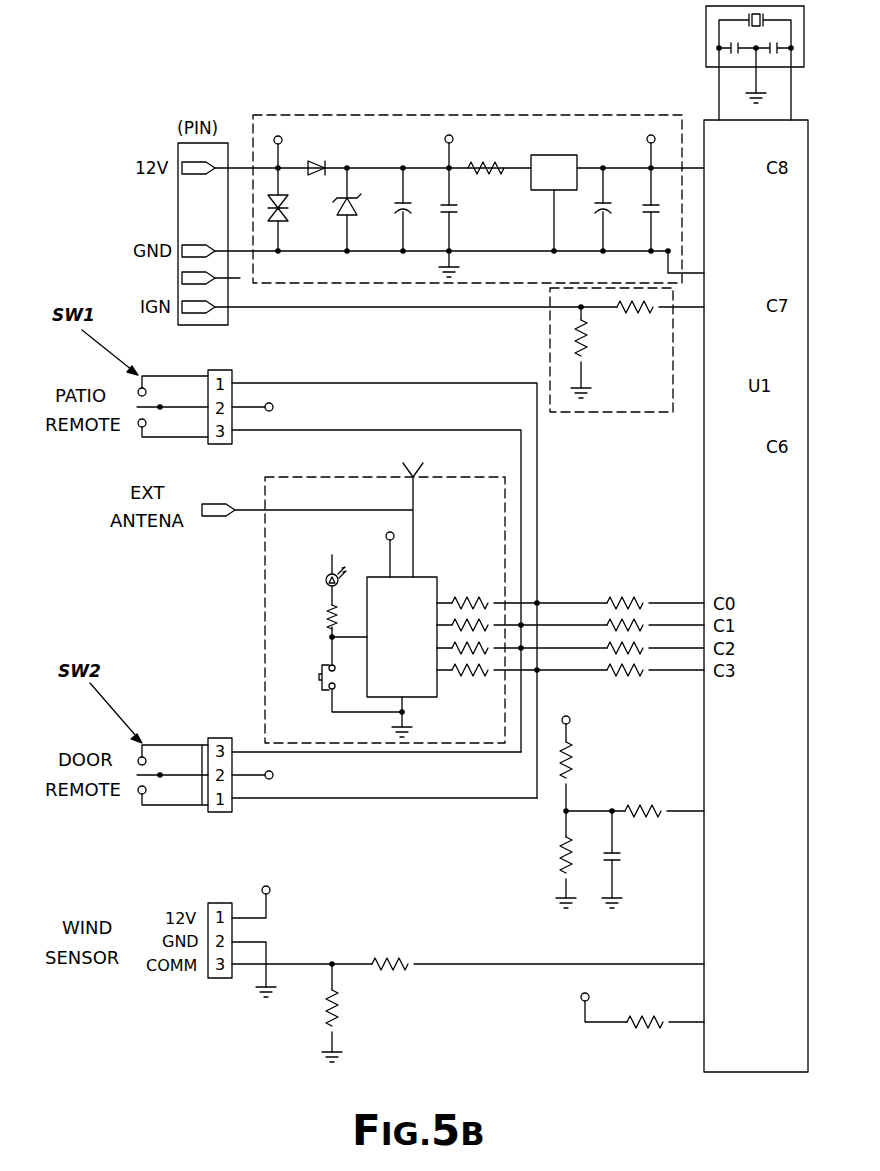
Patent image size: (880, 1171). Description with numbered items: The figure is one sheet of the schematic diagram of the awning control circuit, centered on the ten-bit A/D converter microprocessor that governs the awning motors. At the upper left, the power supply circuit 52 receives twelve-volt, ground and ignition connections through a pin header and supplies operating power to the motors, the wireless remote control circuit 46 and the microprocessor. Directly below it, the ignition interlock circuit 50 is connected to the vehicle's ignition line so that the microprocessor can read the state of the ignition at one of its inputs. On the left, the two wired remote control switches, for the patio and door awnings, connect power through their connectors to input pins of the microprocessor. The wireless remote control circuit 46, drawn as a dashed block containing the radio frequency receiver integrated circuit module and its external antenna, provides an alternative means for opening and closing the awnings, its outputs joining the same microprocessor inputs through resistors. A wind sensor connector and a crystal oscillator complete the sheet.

The power supply circuit 52 is at (305, 115).
The ignition interlock circuit 50 is at (550, 338).
The wireless remote control circuit 46 is at (266, 608).